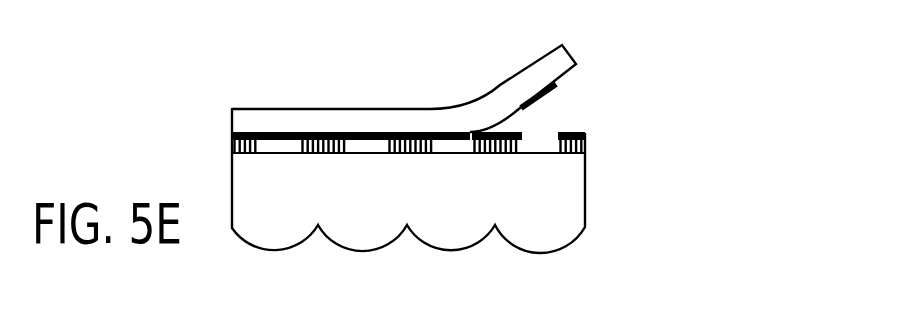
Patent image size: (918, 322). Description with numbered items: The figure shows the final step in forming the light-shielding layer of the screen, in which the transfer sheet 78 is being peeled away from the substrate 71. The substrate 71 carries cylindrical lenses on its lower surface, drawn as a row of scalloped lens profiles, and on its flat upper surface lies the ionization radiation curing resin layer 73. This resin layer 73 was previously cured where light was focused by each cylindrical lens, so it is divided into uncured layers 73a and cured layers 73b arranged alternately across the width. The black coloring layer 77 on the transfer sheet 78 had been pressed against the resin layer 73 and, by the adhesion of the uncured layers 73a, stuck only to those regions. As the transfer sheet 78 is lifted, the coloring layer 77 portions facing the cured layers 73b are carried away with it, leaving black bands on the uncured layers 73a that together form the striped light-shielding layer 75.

The substrate 71 is at (587, 230).
The ionization radiation curing resin layer 73 is at (591, 150).
The uncured layers 73a is at (488, 155).
The cured layers 73b is at (542, 148).
The light-shielding layer 75 is at (585, 134).
The black coloring layer 77 is at (556, 86).
The transfer sheet 78 is at (574, 58).